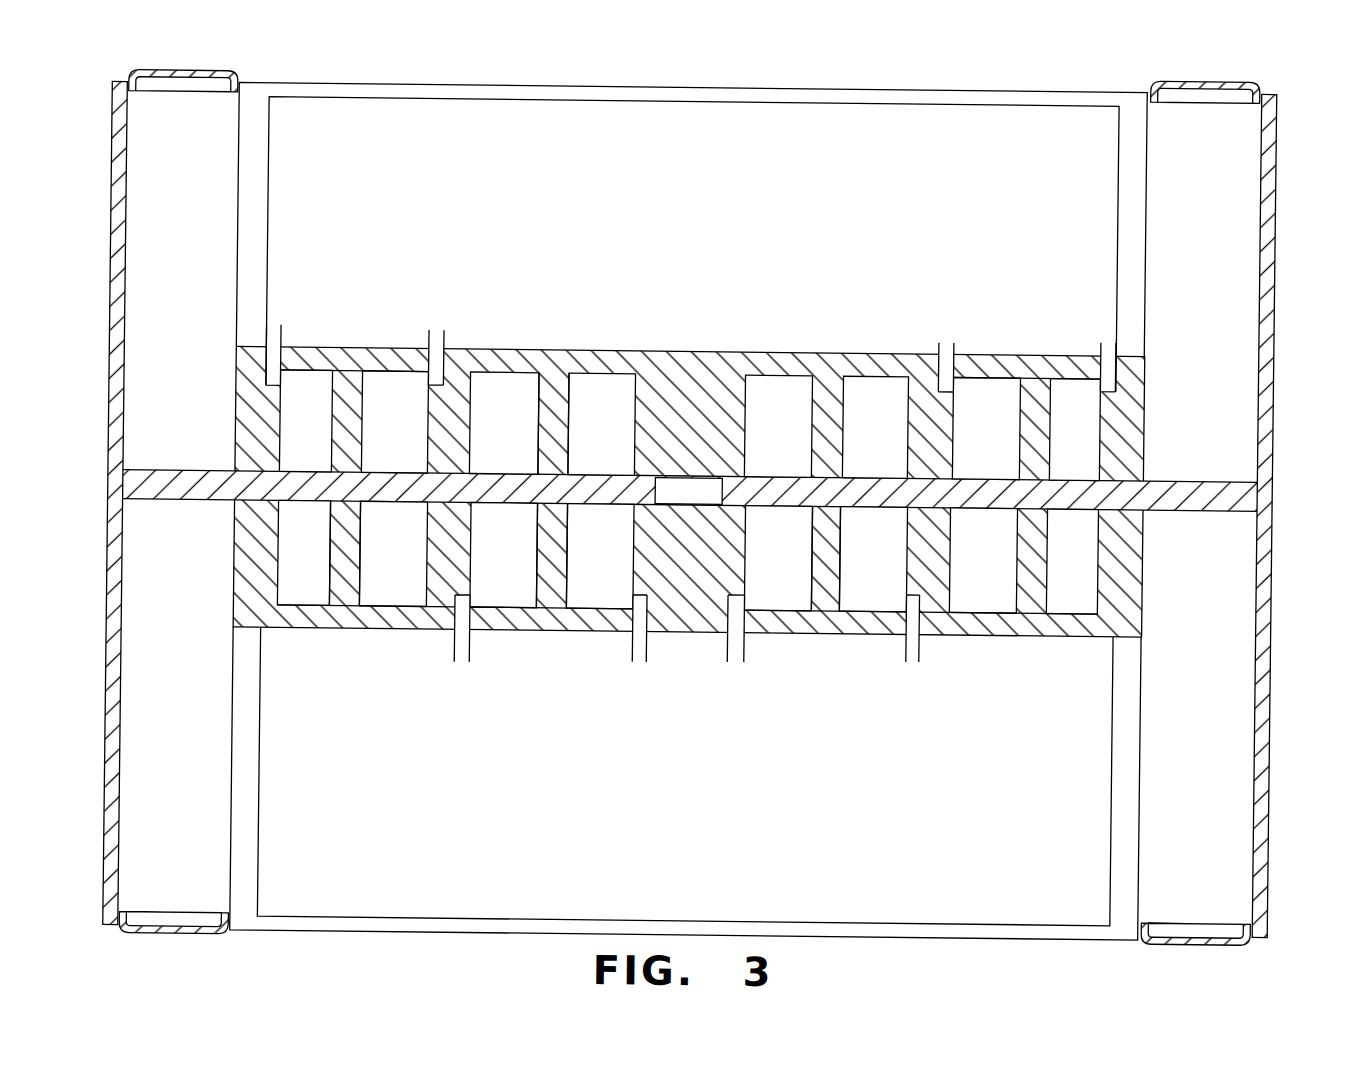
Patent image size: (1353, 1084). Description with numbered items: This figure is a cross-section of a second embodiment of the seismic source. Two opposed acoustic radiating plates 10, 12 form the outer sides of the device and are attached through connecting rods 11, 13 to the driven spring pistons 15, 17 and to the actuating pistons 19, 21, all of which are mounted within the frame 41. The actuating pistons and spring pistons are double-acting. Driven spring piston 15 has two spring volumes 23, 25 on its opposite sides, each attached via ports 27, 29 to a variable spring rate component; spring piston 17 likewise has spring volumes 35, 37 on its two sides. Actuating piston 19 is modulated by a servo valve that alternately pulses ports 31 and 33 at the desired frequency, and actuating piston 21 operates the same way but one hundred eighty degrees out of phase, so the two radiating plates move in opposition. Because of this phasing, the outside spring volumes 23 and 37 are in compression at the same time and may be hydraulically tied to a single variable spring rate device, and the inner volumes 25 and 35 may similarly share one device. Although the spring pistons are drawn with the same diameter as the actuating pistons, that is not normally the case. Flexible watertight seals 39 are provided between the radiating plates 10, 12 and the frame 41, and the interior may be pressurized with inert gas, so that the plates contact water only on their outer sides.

The radiating plate 10 is at (108, 371).
The connecting rod 11 is at (190, 501).
The radiating plate 12 is at (1272, 328).
The connecting rod 13 is at (1205, 486).
The driven spring piston 15 is at (349, 574).
The driven spring piston 17 is at (1031, 394).
The actuating piston 19 is at (553, 398).
The actuating piston 21 is at (828, 583).
The spring volume 23 is at (320, 572).
The spring volume 25 is at (408, 571).
The port 27 is at (276, 328).
The port 29 is at (434, 330).
The port 31 is at (463, 655).
The port 33 is at (641, 653).
The spring volume 35 is at (1000, 574).
The spring volume 37 is at (1090, 572).
The flexible watertight seal 39 is at (207, 77).
The frame 41 is at (843, 88).